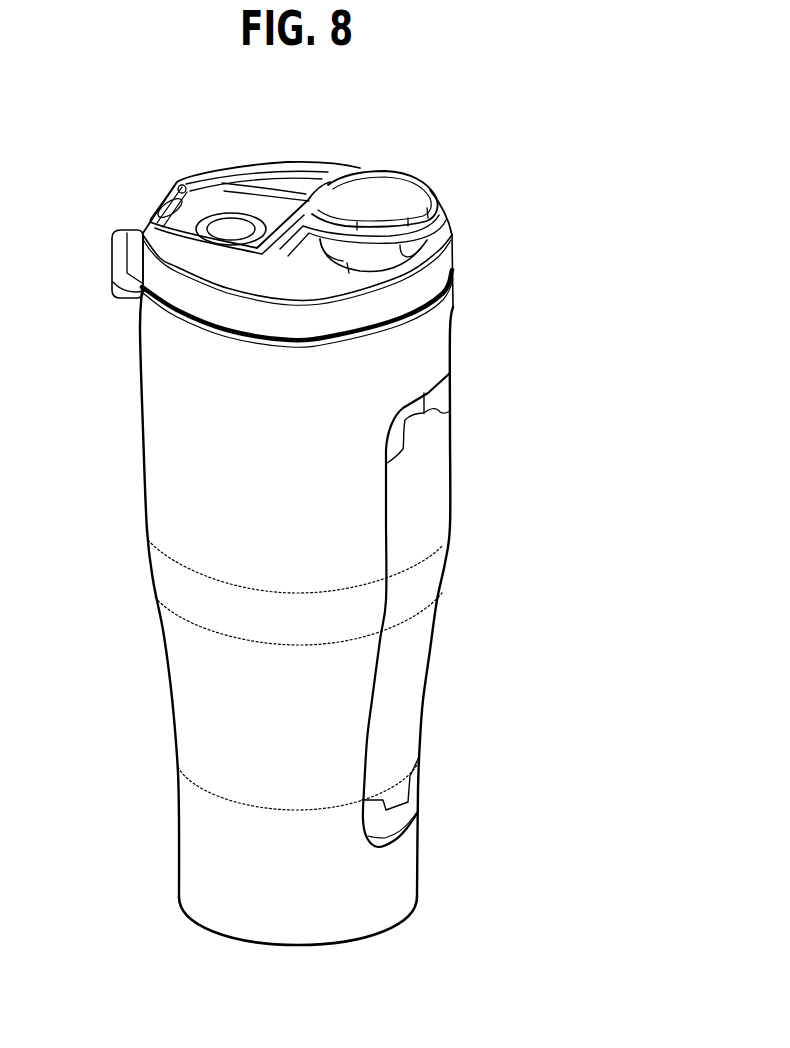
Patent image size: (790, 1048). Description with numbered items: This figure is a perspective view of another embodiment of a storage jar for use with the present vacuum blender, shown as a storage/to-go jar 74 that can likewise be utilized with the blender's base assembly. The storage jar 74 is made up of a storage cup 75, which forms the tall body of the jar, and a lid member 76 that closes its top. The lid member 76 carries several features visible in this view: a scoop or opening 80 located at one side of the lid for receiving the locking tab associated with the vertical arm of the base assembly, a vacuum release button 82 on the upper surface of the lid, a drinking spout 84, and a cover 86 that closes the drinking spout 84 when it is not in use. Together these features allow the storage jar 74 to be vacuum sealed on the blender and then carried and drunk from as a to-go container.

The storage jar 74 is at (378, 140).
The storage cup 75 is at (130, 499).
The lid member 76 is at (198, 310).
The scoop or opening 80 is at (163, 216).
The vacuum release button 82 is at (230, 225).
The drinking spout 84 is at (367, 263).
The cover 86 is at (387, 193).